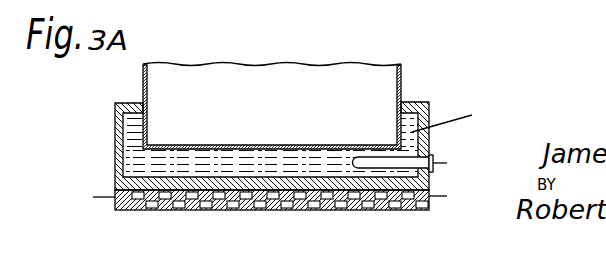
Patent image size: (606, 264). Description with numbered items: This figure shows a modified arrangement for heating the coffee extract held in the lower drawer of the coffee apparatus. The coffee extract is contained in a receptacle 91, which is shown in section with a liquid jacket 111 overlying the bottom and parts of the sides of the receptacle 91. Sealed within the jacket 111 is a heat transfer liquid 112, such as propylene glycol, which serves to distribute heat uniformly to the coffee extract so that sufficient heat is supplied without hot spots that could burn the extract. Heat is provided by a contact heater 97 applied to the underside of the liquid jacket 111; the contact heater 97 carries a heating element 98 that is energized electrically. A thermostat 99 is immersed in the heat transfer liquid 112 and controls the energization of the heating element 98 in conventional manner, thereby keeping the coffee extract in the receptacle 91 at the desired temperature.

The receptacle 91 is at (402, 76).
The liquid jacket 111 is at (114, 127).
The heat transfer liquid 112 is at (115, 170).
The contact heater 97 is at (180, 212).
The heating element 98 is at (266, 203).
The thermostat 99 is at (373, 168).